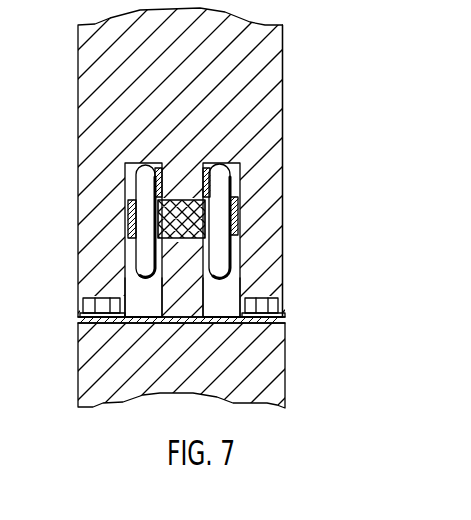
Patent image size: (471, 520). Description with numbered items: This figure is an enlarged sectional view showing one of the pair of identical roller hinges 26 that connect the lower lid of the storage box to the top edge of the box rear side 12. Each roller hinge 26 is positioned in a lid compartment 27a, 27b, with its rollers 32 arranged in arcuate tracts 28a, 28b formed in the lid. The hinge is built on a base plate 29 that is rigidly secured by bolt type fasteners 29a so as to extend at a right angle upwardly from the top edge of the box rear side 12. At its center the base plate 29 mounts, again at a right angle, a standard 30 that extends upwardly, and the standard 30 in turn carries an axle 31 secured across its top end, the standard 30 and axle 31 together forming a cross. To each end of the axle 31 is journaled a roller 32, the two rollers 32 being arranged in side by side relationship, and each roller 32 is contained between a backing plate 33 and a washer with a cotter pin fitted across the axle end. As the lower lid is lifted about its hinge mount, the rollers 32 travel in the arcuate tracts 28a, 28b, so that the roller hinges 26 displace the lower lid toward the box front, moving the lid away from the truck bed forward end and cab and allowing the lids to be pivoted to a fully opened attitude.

The box rear side 12 is at (227, 387).
The roller hinge 26 is at (103, 245).
The lid compartment 27a is at (123, 166).
The lid compartment 27b is at (242, 165).
The arcuate tract 28a is at (123, 271).
The arcuate tract 28b is at (241, 266).
The base plate 29 is at (265, 298).
The bolt type fasteners 29a is at (100, 298).
The standard 30 is at (285, 252).
The axle 31 is at (180, 198).
The roller 32 is at (122, 203).
The backing plate 33 is at (124, 183).